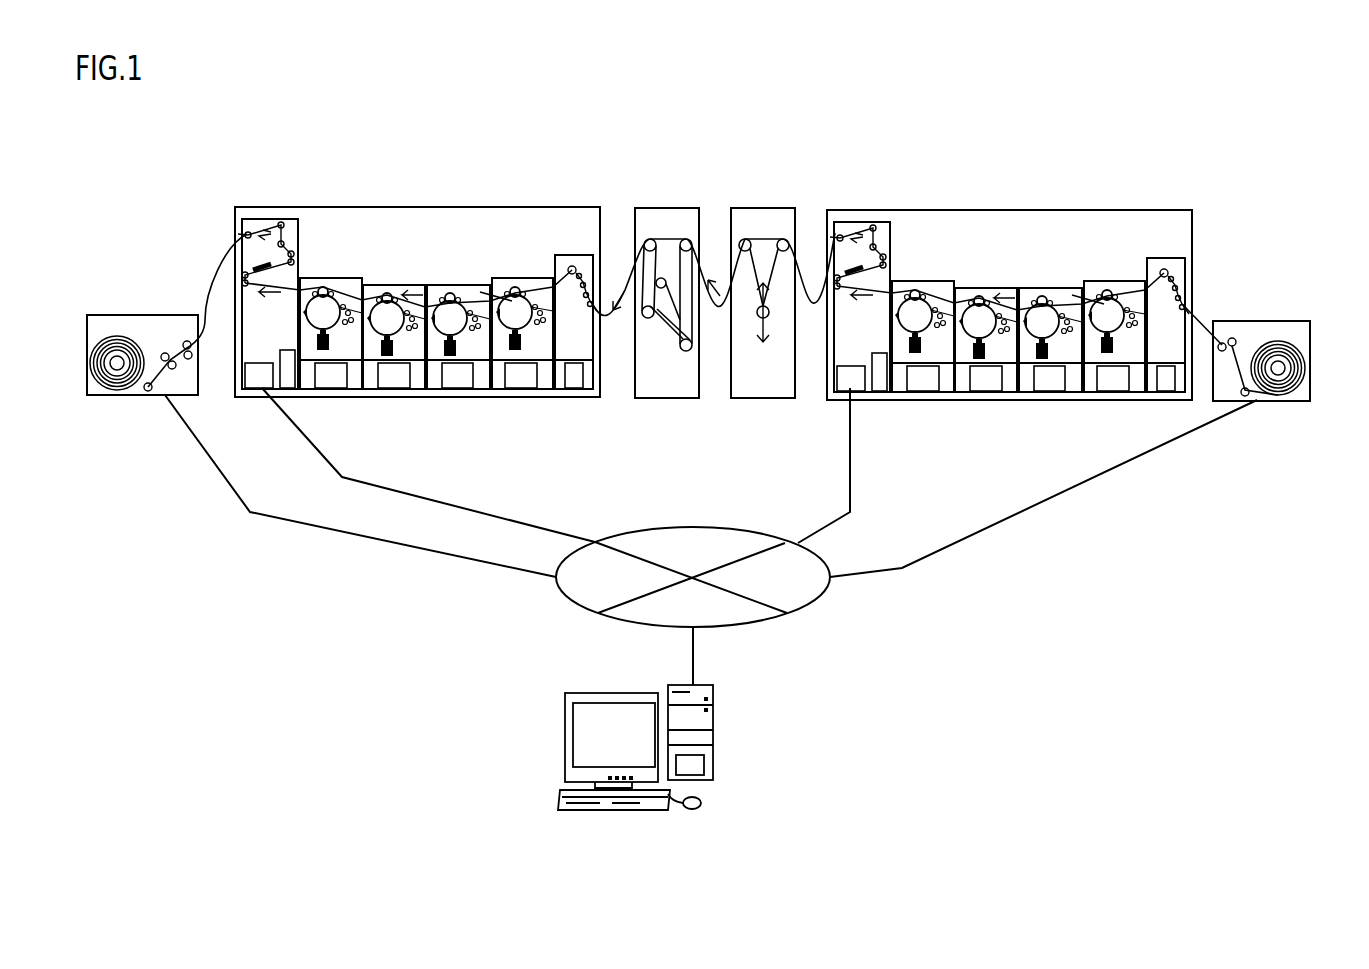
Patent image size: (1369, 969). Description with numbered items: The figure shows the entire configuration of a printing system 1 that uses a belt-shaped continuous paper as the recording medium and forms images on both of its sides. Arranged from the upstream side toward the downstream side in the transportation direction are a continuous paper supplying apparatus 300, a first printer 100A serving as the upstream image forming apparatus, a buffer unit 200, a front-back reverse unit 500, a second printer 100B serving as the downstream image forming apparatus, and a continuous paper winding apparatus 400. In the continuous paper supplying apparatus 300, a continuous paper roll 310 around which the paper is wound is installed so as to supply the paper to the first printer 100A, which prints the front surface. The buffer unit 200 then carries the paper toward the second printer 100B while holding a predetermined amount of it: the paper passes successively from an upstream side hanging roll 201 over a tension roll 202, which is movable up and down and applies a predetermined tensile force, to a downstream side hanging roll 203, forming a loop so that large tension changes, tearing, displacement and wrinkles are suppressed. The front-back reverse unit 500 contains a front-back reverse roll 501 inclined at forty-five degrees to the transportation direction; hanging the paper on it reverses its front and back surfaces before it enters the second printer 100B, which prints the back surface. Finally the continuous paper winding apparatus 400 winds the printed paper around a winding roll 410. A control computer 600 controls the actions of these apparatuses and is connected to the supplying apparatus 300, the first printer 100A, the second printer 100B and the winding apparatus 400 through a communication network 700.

The printing system 1 is at (838, 100).
The first printer 100A is at (1110, 210).
The second printer 100B is at (358, 208).
The buffer unit 200 is at (748, 208).
The upstream side hanging roll 201 is at (784, 239).
The tension roll 202 is at (762, 320).
The downstream side hanging roll 203 is at (746, 239).
The continuous paper supplying apparatus 300 is at (1278, 402).
The continuous paper roll 310 is at (1267, 341).
The continuous paper winding apparatus 400 is at (107, 395).
The winding roll 410 is at (117, 336).
The front-back reverse unit 500 is at (662, 208).
The front-back reverse roll 501 is at (686, 352).
The control computer 600 is at (668, 810).
The communication network 700 is at (765, 622).